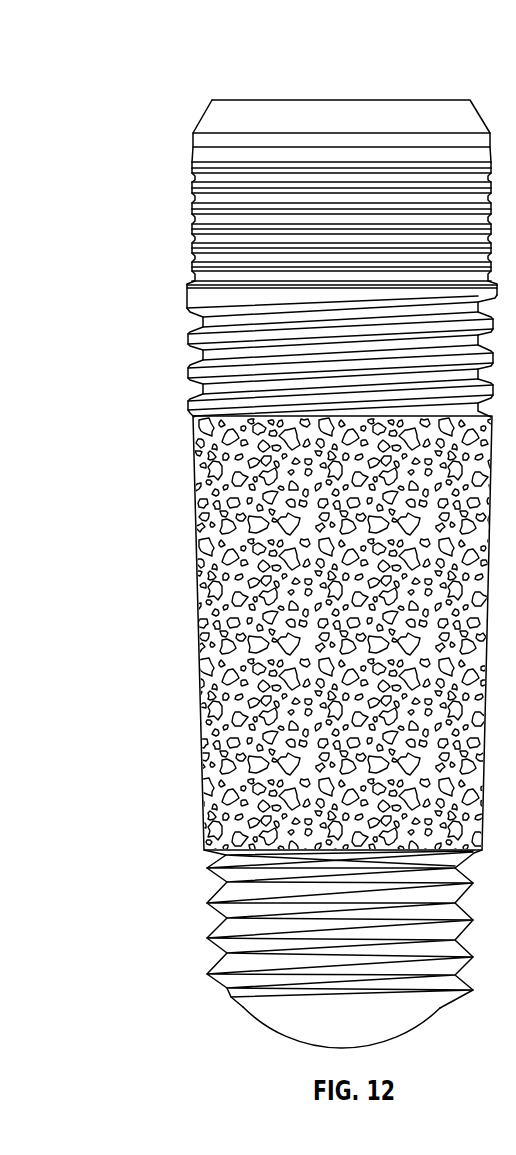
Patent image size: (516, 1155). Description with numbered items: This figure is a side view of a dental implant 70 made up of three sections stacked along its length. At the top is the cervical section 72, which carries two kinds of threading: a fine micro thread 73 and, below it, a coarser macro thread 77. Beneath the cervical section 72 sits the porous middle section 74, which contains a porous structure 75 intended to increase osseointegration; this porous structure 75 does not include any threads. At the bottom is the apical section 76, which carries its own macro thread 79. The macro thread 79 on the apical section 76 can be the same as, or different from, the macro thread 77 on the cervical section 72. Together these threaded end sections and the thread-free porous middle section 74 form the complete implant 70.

The dental implant 70 is at (138, 61).
The cervical section 72 is at (119, 221).
The micro thread 73 is at (195, 226).
The porous middle section 74 is at (111, 613).
The porous structure 75 is at (201, 719).
The apical section 76 is at (91, 945).
The macro thread 77 is at (193, 342).
The macro thread 79 is at (228, 937).